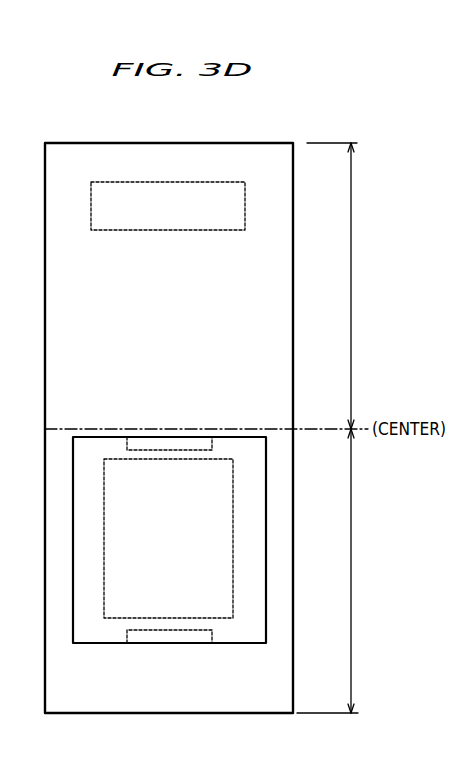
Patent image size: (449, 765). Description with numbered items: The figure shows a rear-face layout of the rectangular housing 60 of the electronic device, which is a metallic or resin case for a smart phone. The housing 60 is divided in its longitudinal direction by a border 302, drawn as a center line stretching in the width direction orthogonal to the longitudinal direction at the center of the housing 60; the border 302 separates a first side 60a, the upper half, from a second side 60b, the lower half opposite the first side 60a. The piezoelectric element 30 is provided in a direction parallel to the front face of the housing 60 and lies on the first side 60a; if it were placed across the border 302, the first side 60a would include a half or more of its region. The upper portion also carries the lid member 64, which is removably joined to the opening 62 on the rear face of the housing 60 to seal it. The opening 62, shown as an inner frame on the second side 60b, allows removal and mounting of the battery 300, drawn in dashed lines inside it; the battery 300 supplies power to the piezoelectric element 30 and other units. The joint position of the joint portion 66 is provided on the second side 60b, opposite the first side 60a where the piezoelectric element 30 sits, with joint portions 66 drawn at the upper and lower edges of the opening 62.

The piezoelectric element 30 is at (200, 182).
The housing 60 is at (293, 213).
The first side 60a is at (347, 286).
The second side 60b is at (344, 571).
The opening 62 is at (73, 575).
The lid member 64 is at (155, 323).
The joint portion 66 is at (157, 442).
The battery 300 is at (137, 513).
The border 302 is at (320, 427).